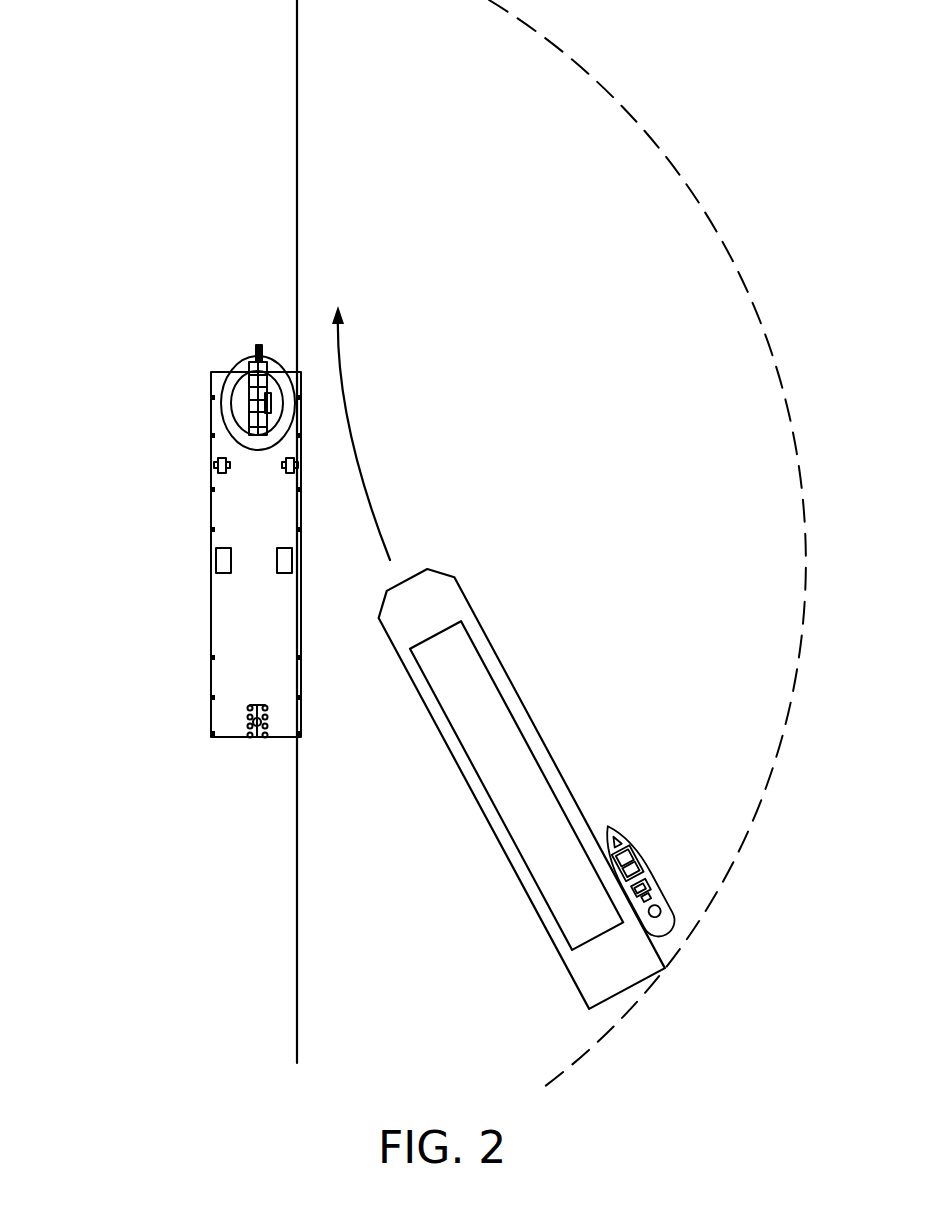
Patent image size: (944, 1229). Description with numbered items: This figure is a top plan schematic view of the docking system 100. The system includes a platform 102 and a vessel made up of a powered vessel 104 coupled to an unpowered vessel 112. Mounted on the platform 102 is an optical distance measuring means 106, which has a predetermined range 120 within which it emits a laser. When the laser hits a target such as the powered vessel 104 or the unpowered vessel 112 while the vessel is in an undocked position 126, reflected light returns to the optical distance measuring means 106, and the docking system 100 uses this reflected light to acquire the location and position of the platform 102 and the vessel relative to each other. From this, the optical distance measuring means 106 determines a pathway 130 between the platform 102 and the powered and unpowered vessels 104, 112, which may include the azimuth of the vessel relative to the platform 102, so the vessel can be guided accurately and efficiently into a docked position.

The docking system 100 is at (114, 160).
The platform 102 is at (212, 505).
The powered vessel 104 is at (659, 876).
The optical distance measuring means 106 is at (216, 566).
The unpowered vessel 112 is at (503, 854).
The predetermined range 120 is at (723, 227).
The undocked position 126 is at (781, 815).
The pathway 130 is at (335, 340).